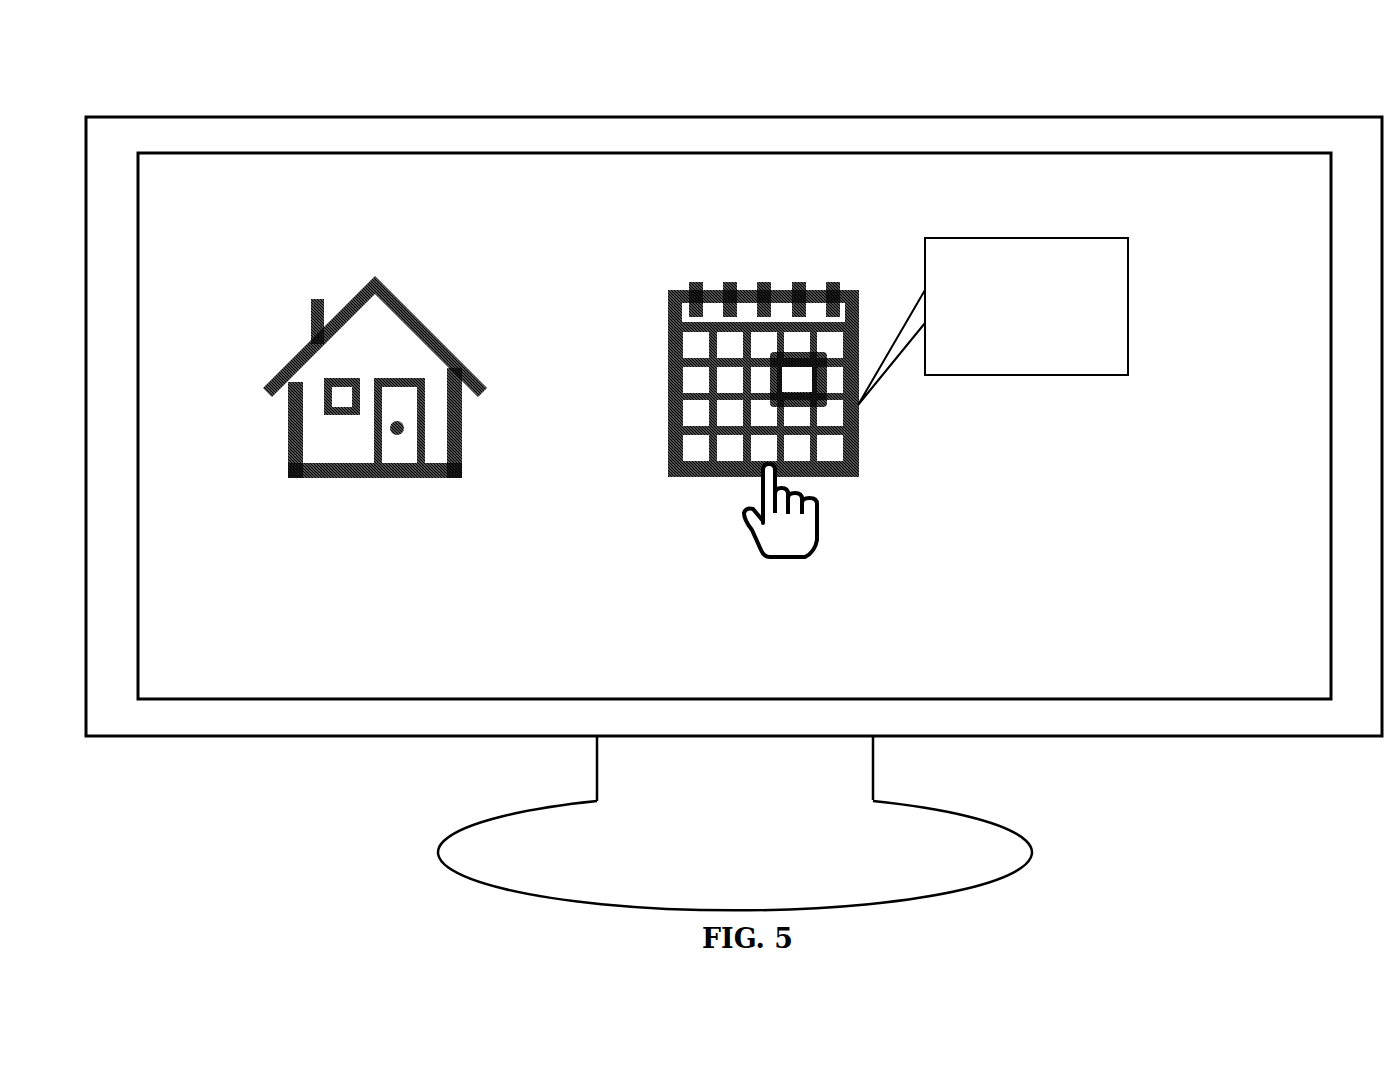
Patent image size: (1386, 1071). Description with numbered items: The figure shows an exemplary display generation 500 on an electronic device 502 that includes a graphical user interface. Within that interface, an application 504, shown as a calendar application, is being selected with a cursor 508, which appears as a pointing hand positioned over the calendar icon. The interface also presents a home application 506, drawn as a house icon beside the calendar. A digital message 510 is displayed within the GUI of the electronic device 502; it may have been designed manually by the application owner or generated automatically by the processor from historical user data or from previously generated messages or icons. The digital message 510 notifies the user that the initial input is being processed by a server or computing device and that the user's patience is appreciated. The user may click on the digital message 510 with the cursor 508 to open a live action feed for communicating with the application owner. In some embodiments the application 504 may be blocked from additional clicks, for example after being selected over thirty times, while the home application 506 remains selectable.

The display generation 500 is at (1340, 86).
The electronic device 502 is at (1110, 737).
The application 504 is at (670, 400).
The home application 506 is at (293, 417).
The cursor 508 is at (795, 558).
The digital message 510 is at (1128, 302).